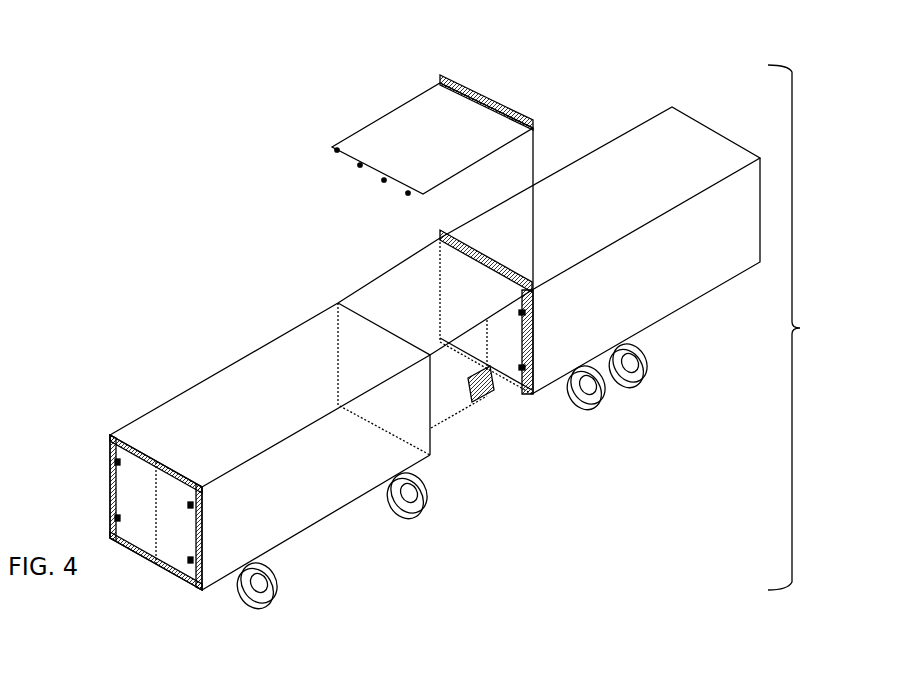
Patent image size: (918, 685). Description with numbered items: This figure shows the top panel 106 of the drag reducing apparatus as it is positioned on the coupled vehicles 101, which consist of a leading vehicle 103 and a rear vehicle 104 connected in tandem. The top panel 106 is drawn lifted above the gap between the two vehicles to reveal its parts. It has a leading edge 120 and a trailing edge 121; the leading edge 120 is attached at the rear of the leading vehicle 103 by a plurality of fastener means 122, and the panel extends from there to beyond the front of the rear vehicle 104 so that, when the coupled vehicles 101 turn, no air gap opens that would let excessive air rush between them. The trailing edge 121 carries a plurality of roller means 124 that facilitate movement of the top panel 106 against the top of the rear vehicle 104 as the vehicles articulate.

The coupled vehicles 101 is at (800, 328).
The leading vehicle 103 is at (600, 261).
The rear vehicle 104 is at (321, 426).
The top panel 106 is at (390, 117).
The leading edge 120 is at (440, 85).
The trailing edge 121 is at (352, 158).
The fastener means 122 is at (527, 122).
The roller means 124 is at (406, 193).